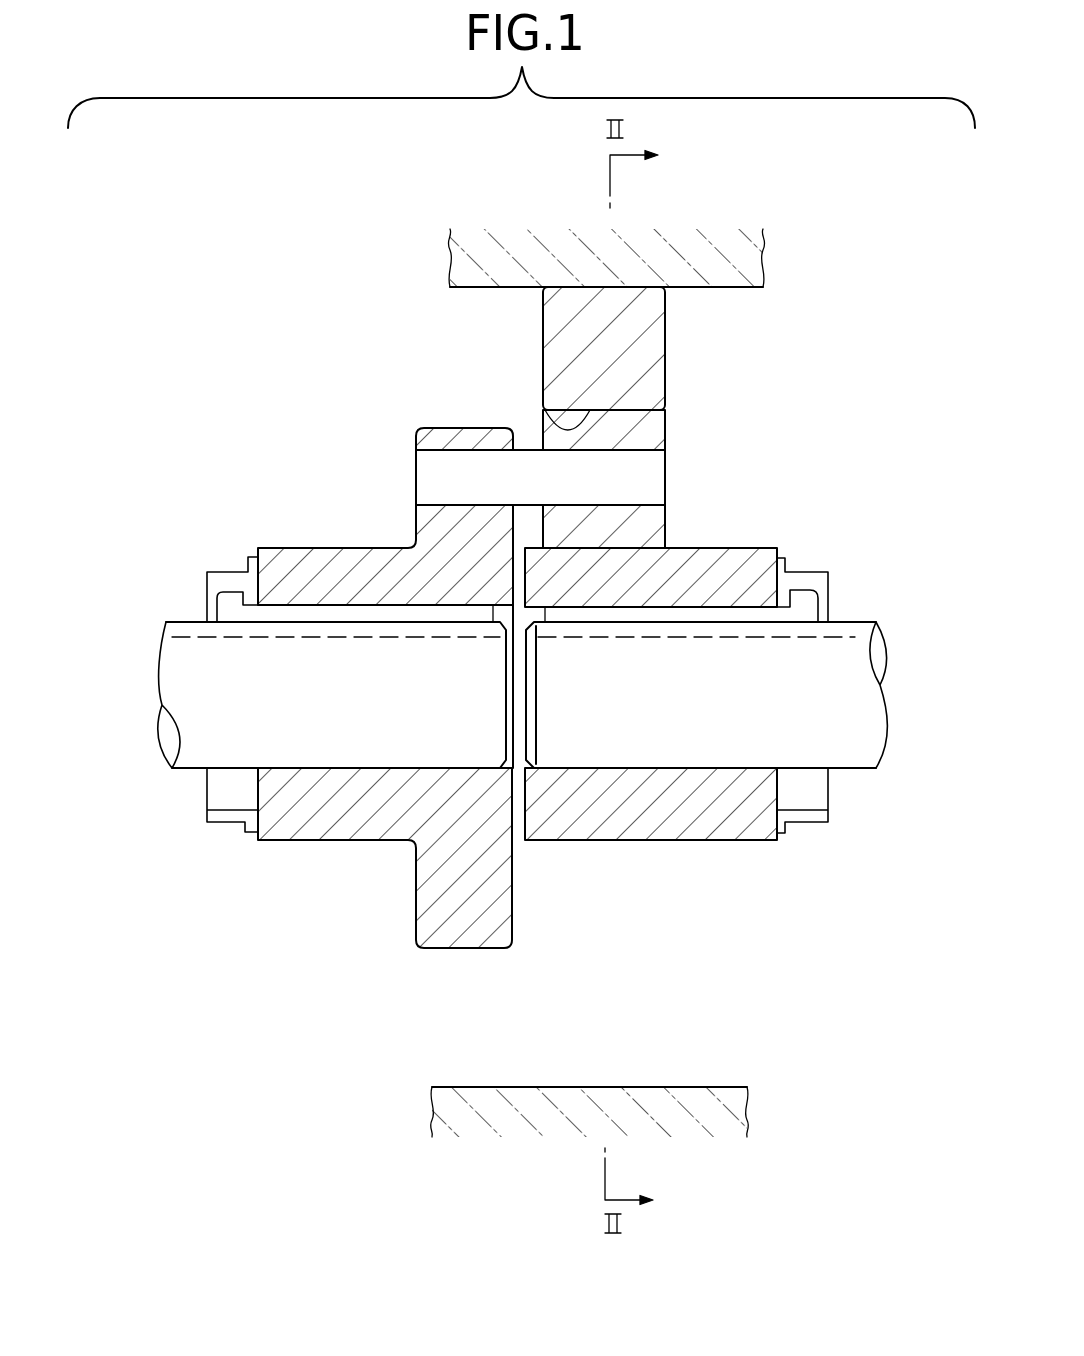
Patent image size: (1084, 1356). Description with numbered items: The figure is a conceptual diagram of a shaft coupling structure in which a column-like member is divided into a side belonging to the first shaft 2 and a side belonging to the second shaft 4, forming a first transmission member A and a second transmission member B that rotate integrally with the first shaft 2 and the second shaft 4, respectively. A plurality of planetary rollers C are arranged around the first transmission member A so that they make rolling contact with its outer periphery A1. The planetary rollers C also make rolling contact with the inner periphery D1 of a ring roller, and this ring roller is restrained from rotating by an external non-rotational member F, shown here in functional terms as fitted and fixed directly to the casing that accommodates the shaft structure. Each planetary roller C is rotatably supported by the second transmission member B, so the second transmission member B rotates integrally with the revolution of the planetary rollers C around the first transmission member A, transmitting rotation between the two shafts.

The first shaft 2 is at (873, 717).
The second shaft 4 is at (192, 705).
The first transmission member A is at (676, 634).
The outer periphery of the first transmission member A1 is at (704, 547).
The second transmission member B is at (284, 546).
The planetary rollers C is at (668, 425).
The inner periphery of the ring roller D1 is at (543, 410).
The external non-rotational member F is at (609, 258).